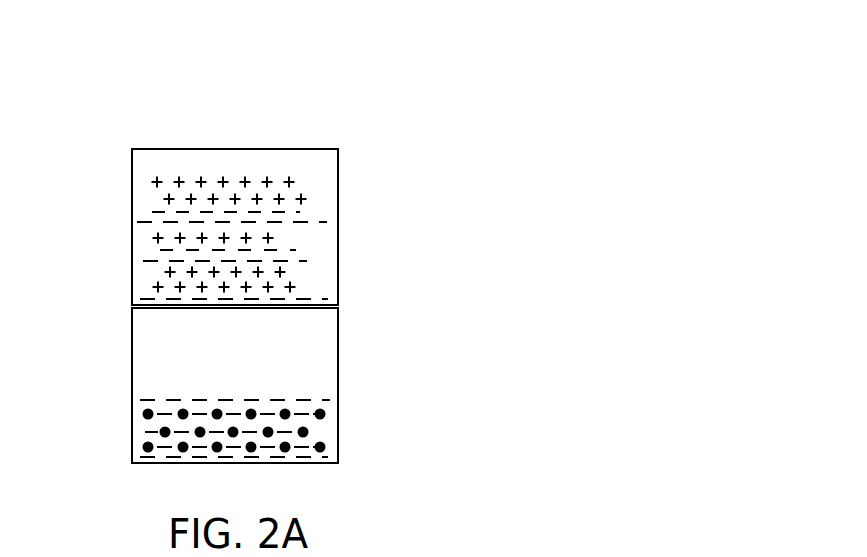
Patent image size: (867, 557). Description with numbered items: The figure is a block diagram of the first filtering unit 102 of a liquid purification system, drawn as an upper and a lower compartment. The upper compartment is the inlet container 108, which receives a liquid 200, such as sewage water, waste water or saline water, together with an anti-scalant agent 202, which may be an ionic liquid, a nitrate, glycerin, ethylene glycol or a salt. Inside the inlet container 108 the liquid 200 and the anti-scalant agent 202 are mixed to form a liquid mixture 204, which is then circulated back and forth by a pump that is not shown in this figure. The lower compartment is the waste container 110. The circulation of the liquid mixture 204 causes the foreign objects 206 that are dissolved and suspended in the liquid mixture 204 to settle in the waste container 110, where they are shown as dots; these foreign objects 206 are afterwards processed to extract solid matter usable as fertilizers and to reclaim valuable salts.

The first filtering unit 102 is at (297, 107).
The inlet container 108 is at (221, 219).
The waste container 110 is at (220, 385).
The liquid 200 is at (266, 182).
The anti-scalant agent 202 is at (266, 250).
The liquid mixture 204 is at (177, 234).
The foreign objects 206 is at (274, 404).